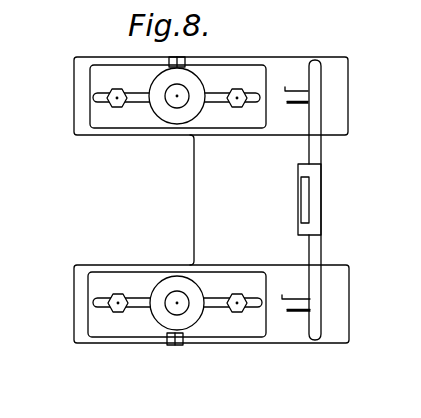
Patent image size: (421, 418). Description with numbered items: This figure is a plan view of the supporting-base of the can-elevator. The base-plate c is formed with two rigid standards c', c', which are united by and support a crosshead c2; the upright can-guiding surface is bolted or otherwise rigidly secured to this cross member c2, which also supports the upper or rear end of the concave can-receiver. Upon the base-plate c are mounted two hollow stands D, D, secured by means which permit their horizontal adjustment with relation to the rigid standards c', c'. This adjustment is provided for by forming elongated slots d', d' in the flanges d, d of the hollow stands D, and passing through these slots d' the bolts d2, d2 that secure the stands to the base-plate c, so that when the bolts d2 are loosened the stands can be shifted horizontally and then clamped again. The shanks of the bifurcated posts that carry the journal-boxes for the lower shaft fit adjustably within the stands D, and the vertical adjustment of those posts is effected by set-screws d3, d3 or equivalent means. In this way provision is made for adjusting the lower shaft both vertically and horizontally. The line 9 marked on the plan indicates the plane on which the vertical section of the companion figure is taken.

The section line 9 is at (130, 201).
The hollow stand D is at (177, 199).
The flange d is at (177, 215).
The elongated slot d' is at (174, 216).
The bolt d2 is at (180, 203).
The set-screw d3 is at (168, 201).
The base-plate c is at (290, 200).
The rigid standard c' is at (327, 201).
The crosshead c2 is at (321, 234).